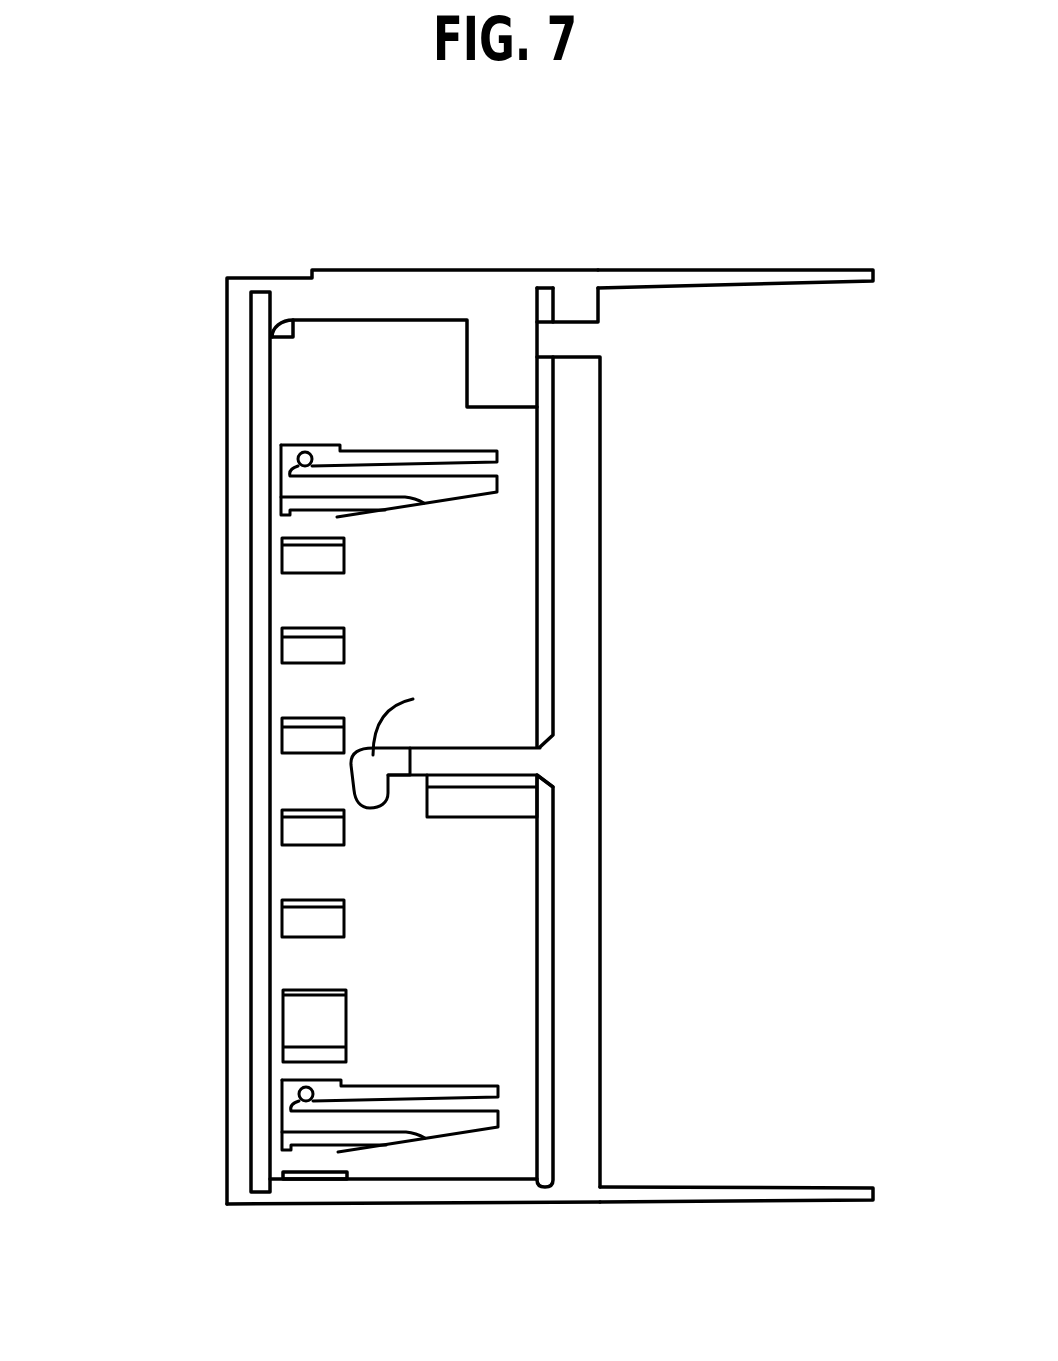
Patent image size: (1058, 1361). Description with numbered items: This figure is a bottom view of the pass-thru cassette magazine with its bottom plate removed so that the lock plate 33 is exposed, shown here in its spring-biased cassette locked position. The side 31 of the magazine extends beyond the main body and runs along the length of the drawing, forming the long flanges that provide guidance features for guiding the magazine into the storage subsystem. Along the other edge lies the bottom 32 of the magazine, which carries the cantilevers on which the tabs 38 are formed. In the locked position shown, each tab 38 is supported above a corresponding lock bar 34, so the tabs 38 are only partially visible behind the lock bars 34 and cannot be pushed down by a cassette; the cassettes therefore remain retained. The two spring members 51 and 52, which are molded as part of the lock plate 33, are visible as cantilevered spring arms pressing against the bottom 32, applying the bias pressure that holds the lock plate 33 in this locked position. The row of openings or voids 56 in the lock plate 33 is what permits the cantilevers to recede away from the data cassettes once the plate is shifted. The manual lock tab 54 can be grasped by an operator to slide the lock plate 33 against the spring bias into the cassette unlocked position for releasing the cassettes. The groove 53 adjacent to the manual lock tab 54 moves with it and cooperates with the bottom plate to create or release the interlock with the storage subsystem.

The side 31 is at (835, 268).
The bottom 32 is at (600, 632).
The lock plate 33 is at (473, 930).
The lock bar 34 is at (305, 683).
The tab 38 is at (303, 546).
The spring member 51 is at (295, 472).
The spring member 52 is at (435, 1102).
The groove 53 is at (413, 699).
The manual lock tab 54 is at (527, 800).
The openings or voids 56 is at (303, 1018).